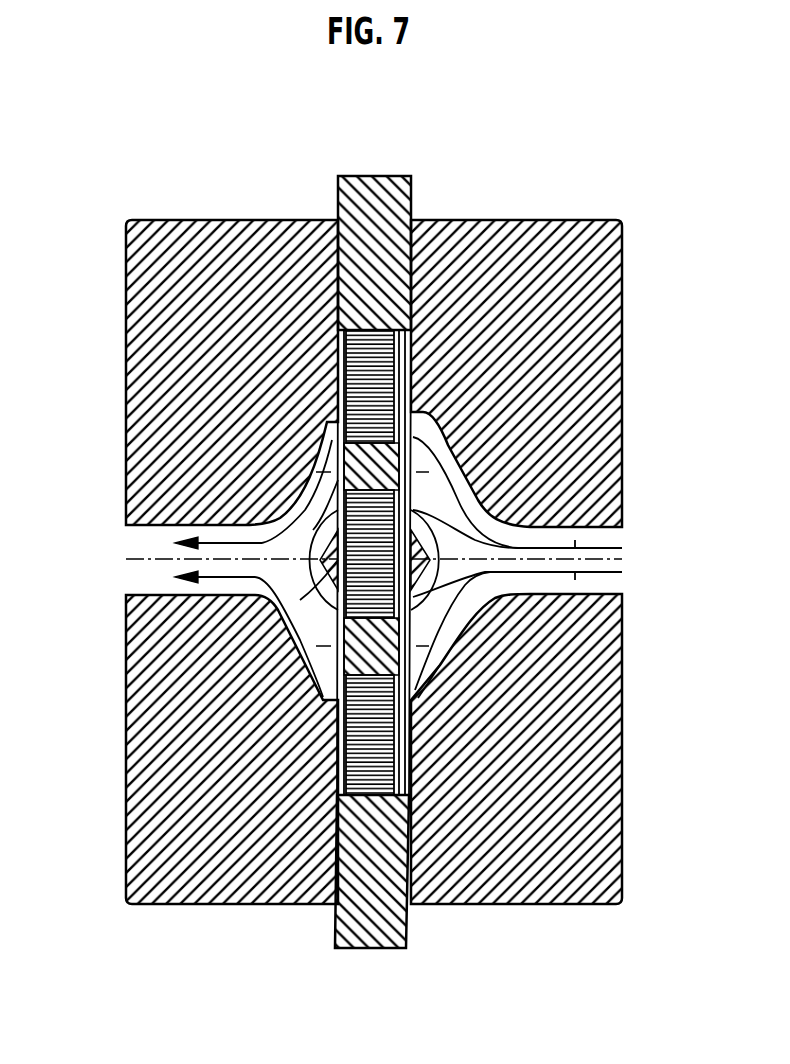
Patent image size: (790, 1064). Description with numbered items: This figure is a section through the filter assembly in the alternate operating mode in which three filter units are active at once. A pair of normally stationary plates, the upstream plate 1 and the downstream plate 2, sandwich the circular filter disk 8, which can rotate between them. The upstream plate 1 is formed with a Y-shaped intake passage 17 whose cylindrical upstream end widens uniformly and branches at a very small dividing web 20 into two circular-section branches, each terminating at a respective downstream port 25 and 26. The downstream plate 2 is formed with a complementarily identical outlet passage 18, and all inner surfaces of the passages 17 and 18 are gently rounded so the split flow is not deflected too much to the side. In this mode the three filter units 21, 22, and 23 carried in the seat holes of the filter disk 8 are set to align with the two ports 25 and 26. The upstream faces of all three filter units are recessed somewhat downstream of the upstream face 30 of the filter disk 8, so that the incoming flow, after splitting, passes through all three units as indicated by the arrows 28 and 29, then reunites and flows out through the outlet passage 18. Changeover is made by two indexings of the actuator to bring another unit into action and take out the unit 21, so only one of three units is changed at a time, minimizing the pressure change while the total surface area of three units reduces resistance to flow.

The upstream plate 1 is at (600, 247).
The downstream plate 2 is at (157, 266).
The filter disk 8 is at (399, 558).
The intake passage 17 is at (620, 565).
The outlet passage 18 is at (143, 577).
The dividing web 20 is at (330, 590).
The filter unit 21 is at (346, 755).
The filter unit 22 is at (346, 522).
The filter unit 23 is at (346, 398).
The downstream port 25 is at (418, 698).
The downstream port 26 is at (415, 450).
The arrow 28 is at (575, 575).
The arrow 29 is at (578, 548).
The upstream face 30 is at (408, 932).